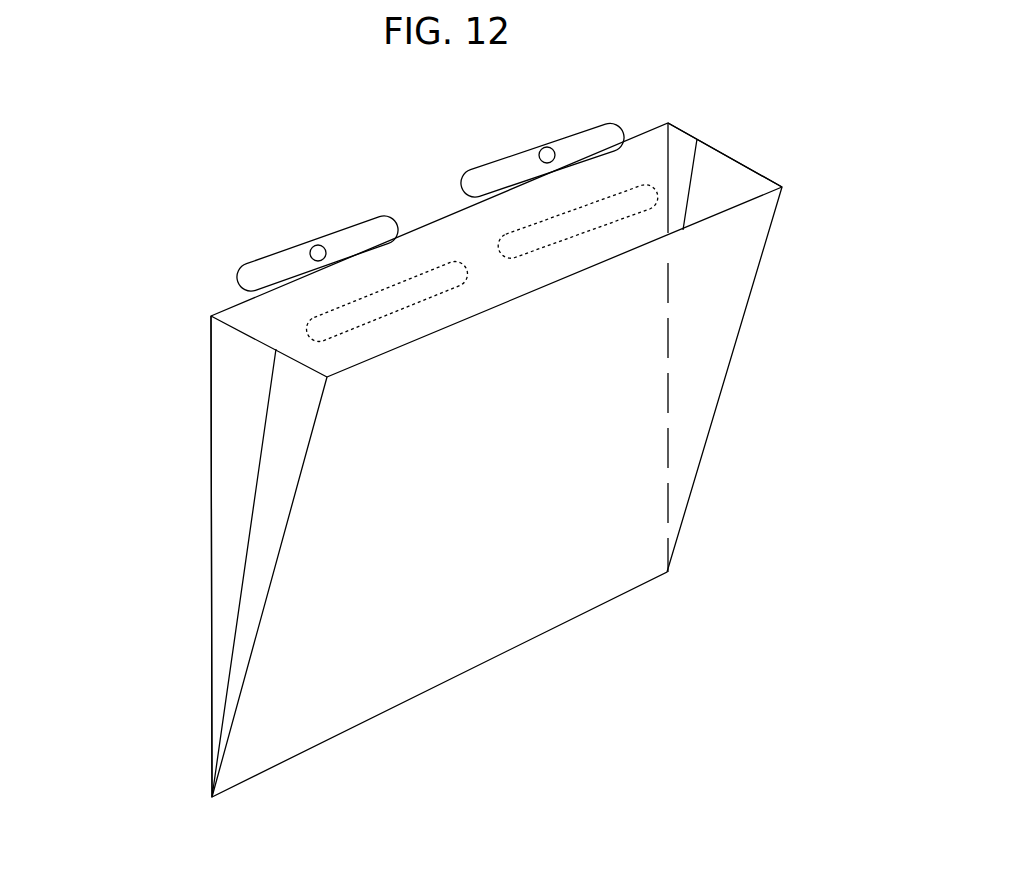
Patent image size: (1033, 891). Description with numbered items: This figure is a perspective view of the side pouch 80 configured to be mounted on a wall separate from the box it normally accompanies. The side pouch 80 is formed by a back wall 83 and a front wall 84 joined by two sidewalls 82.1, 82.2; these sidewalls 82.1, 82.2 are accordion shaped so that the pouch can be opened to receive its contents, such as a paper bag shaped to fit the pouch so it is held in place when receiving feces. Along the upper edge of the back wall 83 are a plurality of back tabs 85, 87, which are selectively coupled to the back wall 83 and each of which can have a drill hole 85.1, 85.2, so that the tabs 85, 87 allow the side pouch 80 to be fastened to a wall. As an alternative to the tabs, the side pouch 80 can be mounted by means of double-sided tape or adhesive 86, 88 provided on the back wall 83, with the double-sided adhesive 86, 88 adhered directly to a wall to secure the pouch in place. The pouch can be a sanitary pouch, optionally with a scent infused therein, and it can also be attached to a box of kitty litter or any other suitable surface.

The side pouch 80 is at (412, 668).
The sidewall 82.1 is at (727, 160).
The sidewall 82.2 is at (263, 420).
The back wall 83 is at (437, 228).
The front wall 84 is at (467, 463).
The back tab 85 is at (268, 267).
The drill hole 85.1 is at (318, 253).
The drill hole 85.2 is at (547, 155).
The double-sided tape or adhesive 86 is at (349, 329).
The back tab 87 is at (485, 172).
The double-sided tape or adhesive 88 is at (605, 231).